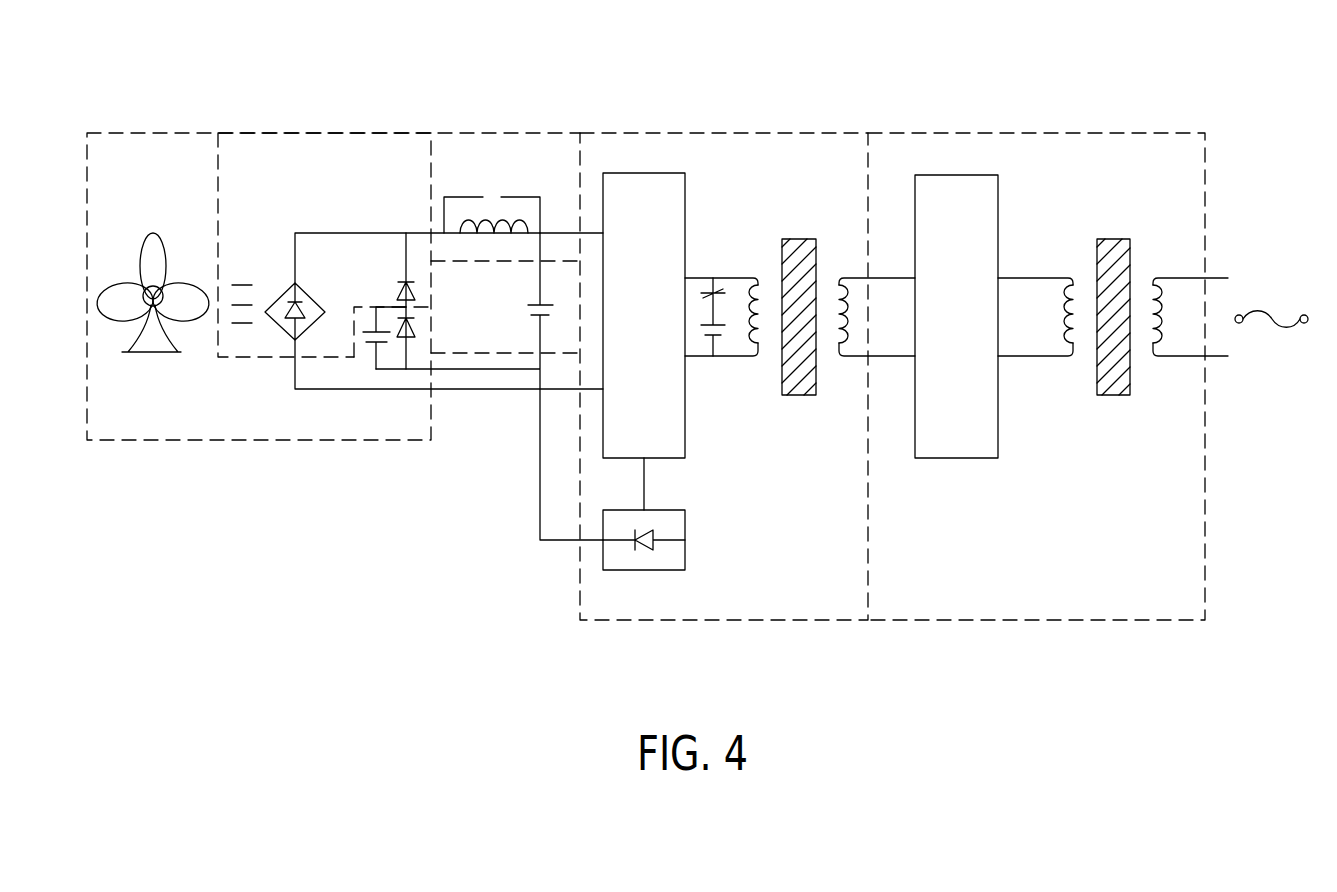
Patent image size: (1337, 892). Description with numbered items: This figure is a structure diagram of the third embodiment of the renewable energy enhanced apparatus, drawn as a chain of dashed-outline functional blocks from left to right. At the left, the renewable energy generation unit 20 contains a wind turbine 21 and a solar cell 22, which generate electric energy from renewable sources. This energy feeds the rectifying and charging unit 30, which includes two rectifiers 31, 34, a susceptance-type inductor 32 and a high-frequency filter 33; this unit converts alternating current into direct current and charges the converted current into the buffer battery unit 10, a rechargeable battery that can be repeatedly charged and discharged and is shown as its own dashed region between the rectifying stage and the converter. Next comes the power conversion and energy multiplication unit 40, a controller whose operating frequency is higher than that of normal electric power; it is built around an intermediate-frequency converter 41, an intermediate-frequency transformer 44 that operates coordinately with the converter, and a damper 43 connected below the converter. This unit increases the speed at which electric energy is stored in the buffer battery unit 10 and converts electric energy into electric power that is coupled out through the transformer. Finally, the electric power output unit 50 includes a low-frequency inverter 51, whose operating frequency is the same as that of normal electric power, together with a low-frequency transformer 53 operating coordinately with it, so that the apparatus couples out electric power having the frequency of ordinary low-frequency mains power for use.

The buffer battery unit 10 is at (502, 340).
The renewable energy generation unit 20 is at (253, 430).
The wind turbine 21 is at (152, 340).
The solar cell 22 is at (395, 352).
The rectifying and charging unit 30 is at (382, 147).
The rectifier 31 is at (312, 305).
The susceptance-type inductor 32 is at (478, 217).
The high-frequency filter 33 is at (493, 176).
The rectifier 34 is at (397, 290).
The power conversion and energy multiplication unit 40 is at (772, 158).
The intermediate-frequency converter 41 is at (643, 185).
The damper 43 is at (672, 558).
The intermediate-frequency transformer 44 is at (797, 405).
The electric power output unit 50 is at (1087, 158).
The low-frequency inverter 51 is at (960, 458).
The low-frequency transformer 53 is at (1110, 407).